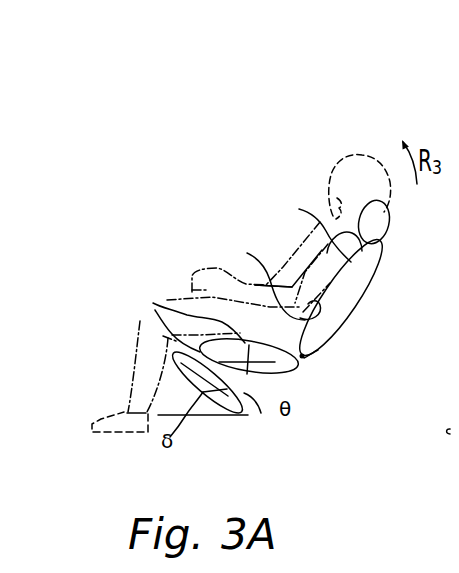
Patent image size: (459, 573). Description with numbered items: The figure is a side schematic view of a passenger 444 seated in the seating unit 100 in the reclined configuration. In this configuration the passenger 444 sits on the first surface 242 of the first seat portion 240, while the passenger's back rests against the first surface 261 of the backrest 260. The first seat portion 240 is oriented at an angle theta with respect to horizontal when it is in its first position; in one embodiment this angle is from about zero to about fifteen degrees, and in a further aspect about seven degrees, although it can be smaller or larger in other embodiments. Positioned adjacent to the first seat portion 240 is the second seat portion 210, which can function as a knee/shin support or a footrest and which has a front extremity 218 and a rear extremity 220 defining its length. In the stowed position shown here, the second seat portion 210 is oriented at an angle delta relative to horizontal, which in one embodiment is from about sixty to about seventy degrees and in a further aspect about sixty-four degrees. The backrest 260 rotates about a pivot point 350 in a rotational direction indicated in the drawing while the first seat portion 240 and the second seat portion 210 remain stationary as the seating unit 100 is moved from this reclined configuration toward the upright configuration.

The seating unit 100 is at (392, 162).
The backrest 260 is at (299, 209).
The first surface of the backrest 261 is at (247, 253).
The passenger 444 is at (260, 255).
The first surface of the first seat portion 242 is at (170, 335).
The front extremity of the second seat portion 218 is at (153, 305).
The pivot point 350 is at (305, 356).
The rear extremity of the second seat portion 220 is at (300, 367).
The first seat portion 240 is at (297, 365).
The second seat portion 210 is at (249, 418).